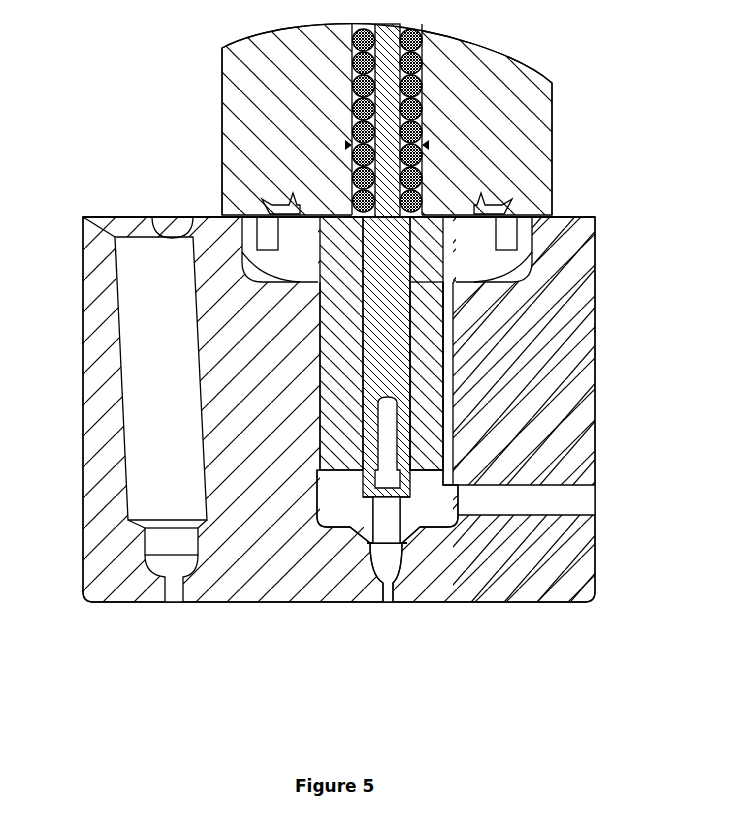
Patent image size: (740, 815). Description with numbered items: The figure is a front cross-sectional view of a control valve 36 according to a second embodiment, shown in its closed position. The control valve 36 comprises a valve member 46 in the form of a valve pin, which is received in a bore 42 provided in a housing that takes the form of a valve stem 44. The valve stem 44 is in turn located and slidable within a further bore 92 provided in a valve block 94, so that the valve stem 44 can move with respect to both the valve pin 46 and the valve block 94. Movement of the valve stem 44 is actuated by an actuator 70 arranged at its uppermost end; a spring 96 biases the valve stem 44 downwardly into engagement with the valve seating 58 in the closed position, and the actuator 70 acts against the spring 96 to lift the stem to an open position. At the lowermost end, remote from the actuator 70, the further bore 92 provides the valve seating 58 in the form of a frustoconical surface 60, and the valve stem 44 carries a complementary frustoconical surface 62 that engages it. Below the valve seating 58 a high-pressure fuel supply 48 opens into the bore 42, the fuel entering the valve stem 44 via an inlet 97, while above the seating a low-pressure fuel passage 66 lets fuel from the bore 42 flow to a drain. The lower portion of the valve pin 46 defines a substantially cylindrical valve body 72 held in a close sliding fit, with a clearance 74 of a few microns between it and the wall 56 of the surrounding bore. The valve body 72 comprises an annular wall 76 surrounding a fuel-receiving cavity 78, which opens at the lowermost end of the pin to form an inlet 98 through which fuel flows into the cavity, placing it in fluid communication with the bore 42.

The control valve 36 is at (56, 69).
The actuator 70 is at (508, 132).
The spring 96 is at (415, 50).
The valve block 94 is at (281, 402).
The low-pressure fuel passage 66 is at (510, 262).
The valve member 46 is at (400, 320).
The wall 56 is at (410, 327).
The bore 42 is at (420, 340).
The clearance 74 is at (440, 362).
The further bore 92 is at (440, 385).
The valve stem 44 is at (486, 346).
The valve body 72 is at (424, 422).
The annular wall 76 is at (405, 440).
The fuel-receiving cavity 78 is at (387, 453).
The frustoconical surface 62 is at (432, 507).
The valve seating 58 is at (442, 537).
The frustoconical surface 60 is at (347, 540).
The high-pressure fuel supply 48 is at (352, 588).
The inlet 97 is at (388, 495).
The inlet 98 is at (402, 505).